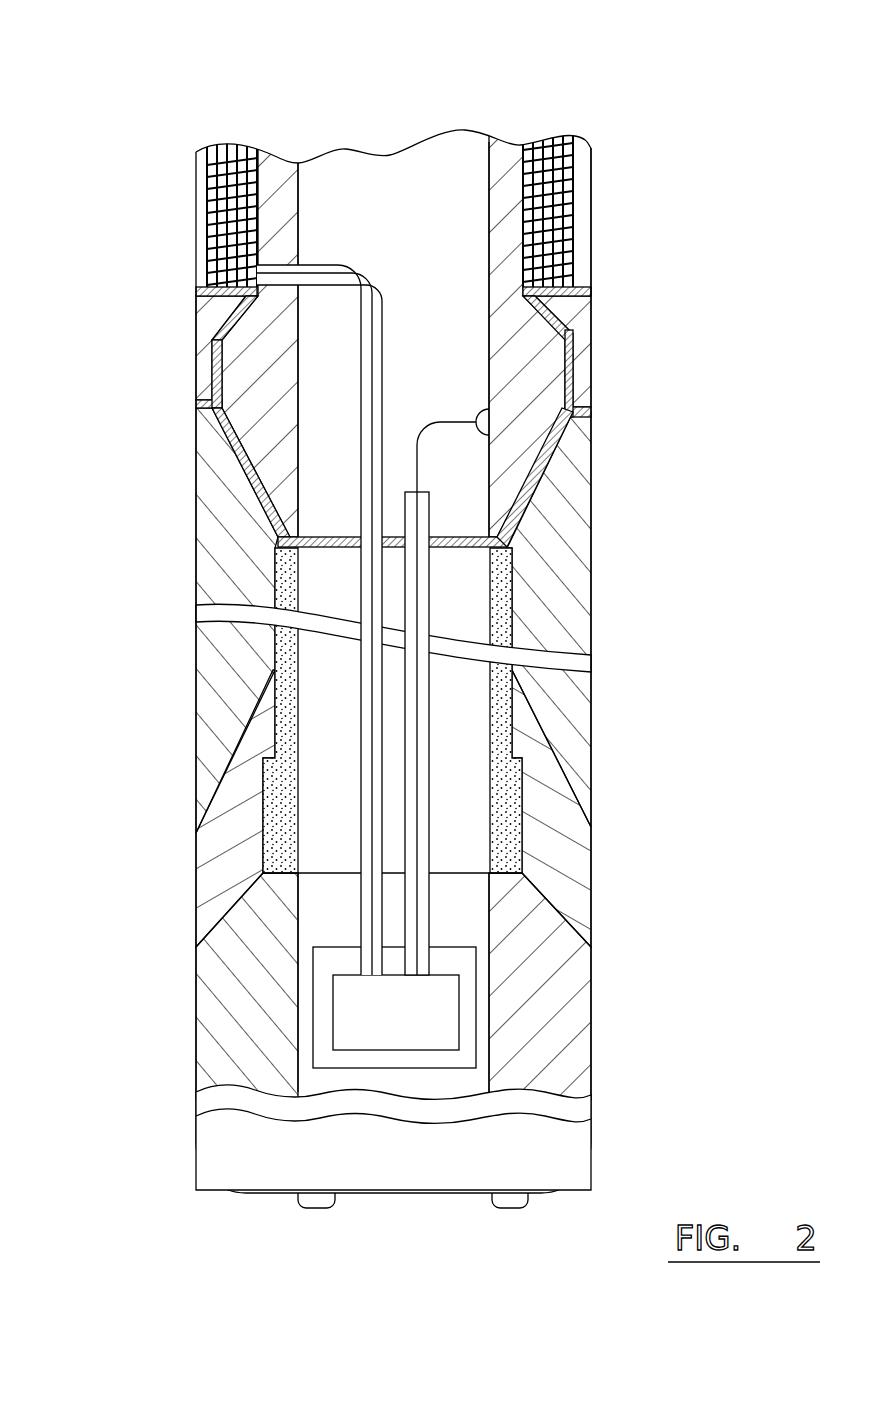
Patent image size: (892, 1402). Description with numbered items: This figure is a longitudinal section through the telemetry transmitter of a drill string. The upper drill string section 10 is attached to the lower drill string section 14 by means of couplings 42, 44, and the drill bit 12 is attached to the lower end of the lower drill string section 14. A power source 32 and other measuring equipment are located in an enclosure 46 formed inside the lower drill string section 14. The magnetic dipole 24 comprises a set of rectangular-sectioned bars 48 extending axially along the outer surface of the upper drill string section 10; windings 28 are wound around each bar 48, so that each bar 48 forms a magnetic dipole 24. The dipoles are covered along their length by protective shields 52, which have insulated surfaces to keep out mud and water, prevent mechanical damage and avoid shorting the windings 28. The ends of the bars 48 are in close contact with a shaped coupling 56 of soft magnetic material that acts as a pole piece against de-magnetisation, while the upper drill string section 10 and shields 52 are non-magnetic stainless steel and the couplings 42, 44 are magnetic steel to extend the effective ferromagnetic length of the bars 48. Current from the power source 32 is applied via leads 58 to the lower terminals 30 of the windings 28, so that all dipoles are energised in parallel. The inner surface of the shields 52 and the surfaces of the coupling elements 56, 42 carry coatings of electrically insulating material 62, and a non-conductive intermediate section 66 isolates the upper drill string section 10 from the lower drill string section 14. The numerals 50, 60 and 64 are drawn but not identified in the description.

The upper drill string section 10 is at (278, 190).
The drill bit 12 is at (245, 1140).
The lower drill string section 14 is at (270, 928).
The magnetic dipole 24 is at (208, 200).
The windings 28 is at (220, 247).
The conductors 30 is at (257, 273).
The power source 32 is at (409, 1027).
The coupling 42 is at (220, 667).
The coupling 44 is at (232, 852).
The enclosure 46 is at (467, 1017).
The rectangular-sectioned bars 48 is at (210, 165).
The assembly 50 is at (544, 132).
The protective shields 52 is at (203, 227).
The shaped coupling 56 is at (215, 322).
The leads 58 is at (440, 420).
The outer layer 60 is at (572, 188).
The electrically insulating material 62 is at (572, 363).
The conical member 64 is at (548, 463).
The intermediate section 66 is at (520, 847).